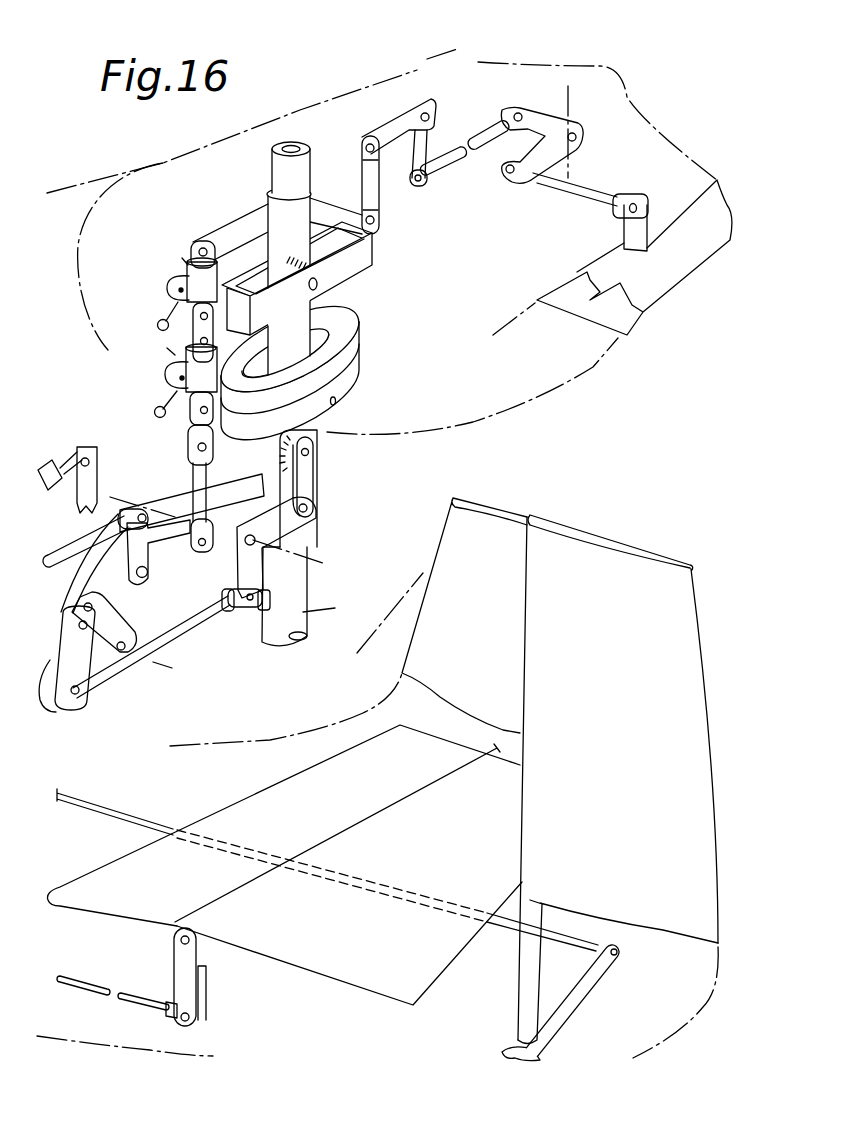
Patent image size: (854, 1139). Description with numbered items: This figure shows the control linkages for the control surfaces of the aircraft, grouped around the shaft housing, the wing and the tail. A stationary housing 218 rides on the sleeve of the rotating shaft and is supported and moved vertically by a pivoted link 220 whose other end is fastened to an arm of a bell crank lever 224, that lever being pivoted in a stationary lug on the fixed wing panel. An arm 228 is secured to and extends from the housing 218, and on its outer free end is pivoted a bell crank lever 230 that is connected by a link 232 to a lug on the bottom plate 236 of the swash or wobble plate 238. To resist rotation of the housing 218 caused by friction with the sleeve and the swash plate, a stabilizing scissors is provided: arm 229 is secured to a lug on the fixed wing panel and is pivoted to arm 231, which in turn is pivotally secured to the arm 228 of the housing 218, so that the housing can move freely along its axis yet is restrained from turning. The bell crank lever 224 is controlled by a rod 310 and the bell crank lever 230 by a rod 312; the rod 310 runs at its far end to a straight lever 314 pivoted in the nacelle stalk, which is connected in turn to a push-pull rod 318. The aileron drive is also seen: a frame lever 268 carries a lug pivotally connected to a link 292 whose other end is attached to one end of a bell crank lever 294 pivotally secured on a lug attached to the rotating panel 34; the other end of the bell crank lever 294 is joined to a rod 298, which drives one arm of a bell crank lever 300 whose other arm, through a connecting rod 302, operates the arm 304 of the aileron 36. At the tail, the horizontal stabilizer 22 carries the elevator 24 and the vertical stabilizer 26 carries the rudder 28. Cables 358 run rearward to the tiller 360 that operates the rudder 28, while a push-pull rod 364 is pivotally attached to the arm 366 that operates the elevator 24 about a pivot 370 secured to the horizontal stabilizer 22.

The horizontal stabilizer 22 is at (276, 792).
The elevator 24 is at (426, 990).
The vertical stabilizer 26 is at (417, 656).
The rudder 28 is at (635, 563).
The rotating panel 34 is at (417, 72).
The aileron 36 is at (672, 297).
The stationary housing 218 is at (320, 476).
The pivoted link 220 is at (318, 490).
The bell crank lever 224 is at (247, 567).
The arm 228 is at (253, 208).
The arm 229 is at (113, 628).
The bell crank lever 230 is at (155, 574).
The arm 231 is at (80, 582).
The link 232 is at (192, 485).
The bottom plate 236 is at (363, 381).
The swash or wobble plate 238 is at (363, 341).
The frame lever 268 is at (372, 263).
The link 292 is at (380, 192).
The bell crank lever 294 is at (395, 108).
The rod 298 is at (486, 130).
The bell crank lever 300 is at (584, 136).
The connecting rod 302 is at (587, 187).
The arm 304 is at (656, 235).
The rod 310 is at (174, 644).
The rod 312 is at (88, 526).
The straight lever 314 is at (58, 698).
The push-pull rod 318 is at (48, 460).
The cables 358 is at (128, 811).
The tiller 360 is at (597, 1005).
The push-pull rod 364 is at (100, 980).
The arm 366 is at (207, 990).
The pivot 370 is at (175, 950).